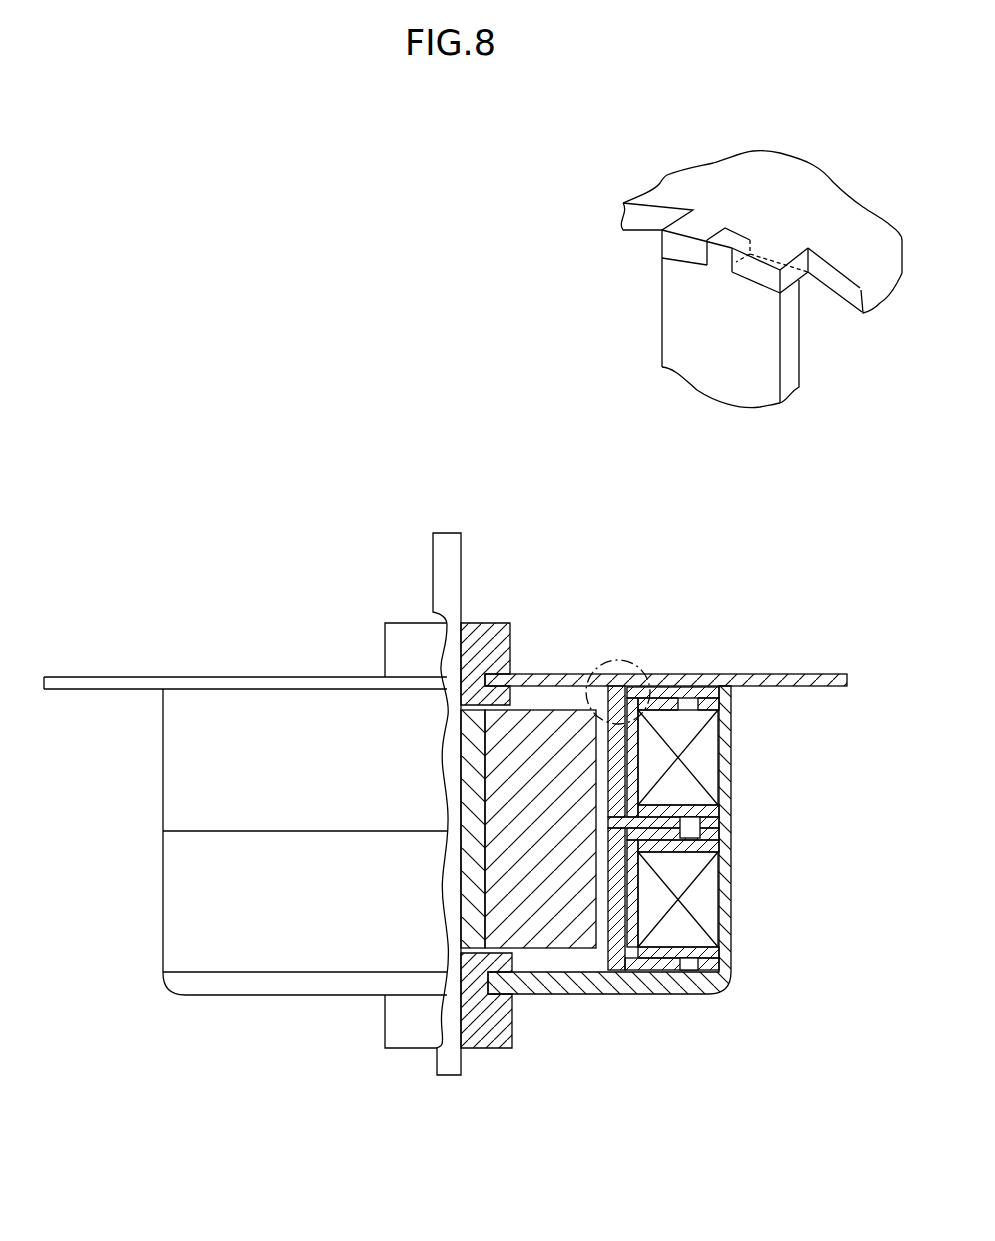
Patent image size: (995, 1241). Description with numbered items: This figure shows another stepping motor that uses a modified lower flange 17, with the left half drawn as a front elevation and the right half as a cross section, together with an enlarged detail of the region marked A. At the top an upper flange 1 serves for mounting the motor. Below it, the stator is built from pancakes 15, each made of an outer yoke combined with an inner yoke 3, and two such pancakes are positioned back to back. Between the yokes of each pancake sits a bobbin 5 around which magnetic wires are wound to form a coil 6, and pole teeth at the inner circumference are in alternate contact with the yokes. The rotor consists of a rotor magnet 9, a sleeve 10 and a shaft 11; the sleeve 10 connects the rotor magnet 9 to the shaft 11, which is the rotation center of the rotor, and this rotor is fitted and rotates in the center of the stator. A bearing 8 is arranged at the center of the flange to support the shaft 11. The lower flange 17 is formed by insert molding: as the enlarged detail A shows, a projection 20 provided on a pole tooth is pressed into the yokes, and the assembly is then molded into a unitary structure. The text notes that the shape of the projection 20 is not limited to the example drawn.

The upper flange 1 is at (753, 673).
The inner yoke 3 is at (713, 820).
The bobbin 5 is at (669, 702).
The coil 6 is at (692, 758).
The bearing 8 is at (495, 636).
The rotor magnet 9 is at (555, 927).
The sleeve 10 is at (480, 880).
The shaft 11 is at (435, 583).
The pancake 15 is at (232, 753).
The lower flange 17 is at (216, 985).
The projection 20 is at (722, 258).
The detail region A is at (617, 660).